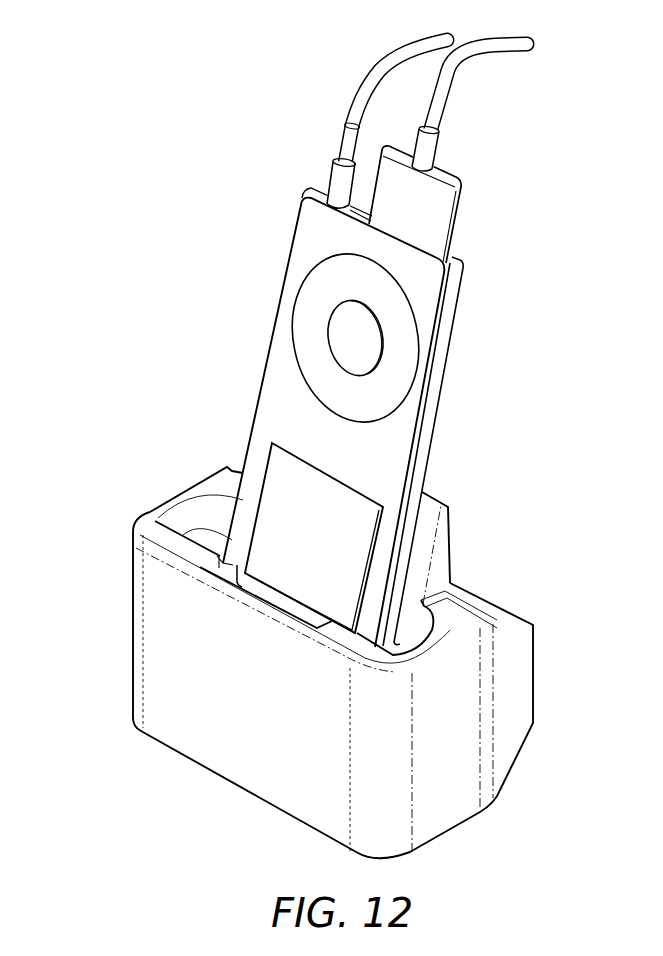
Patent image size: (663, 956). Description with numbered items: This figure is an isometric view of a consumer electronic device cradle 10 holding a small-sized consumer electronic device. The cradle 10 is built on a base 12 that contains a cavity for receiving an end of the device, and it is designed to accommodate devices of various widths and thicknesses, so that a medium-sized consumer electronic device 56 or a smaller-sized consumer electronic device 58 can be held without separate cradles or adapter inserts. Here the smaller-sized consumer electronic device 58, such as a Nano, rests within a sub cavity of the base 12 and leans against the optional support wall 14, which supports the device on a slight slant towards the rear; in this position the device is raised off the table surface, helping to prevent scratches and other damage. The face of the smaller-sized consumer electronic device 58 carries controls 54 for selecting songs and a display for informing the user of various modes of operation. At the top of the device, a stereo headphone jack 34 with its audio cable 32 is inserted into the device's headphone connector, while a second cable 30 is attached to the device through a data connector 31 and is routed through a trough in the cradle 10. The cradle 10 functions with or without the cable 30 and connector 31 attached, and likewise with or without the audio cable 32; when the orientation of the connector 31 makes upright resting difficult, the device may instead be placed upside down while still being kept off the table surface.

The consumer electronic device cradle 10 is at (387, 455).
The base 12 is at (258, 710).
The support wall 14 is at (438, 496).
The cable 30 is at (507, 53).
The connector 31 is at (457, 215).
The audio cable 32 is at (378, 62).
The stereo headphone jack 34 is at (326, 175).
The controls 54 is at (313, 312).
The medium-sized consumer electronic device 56 is at (290, 473).
The smaller-sized consumer electronic device 58 is at (463, 270).